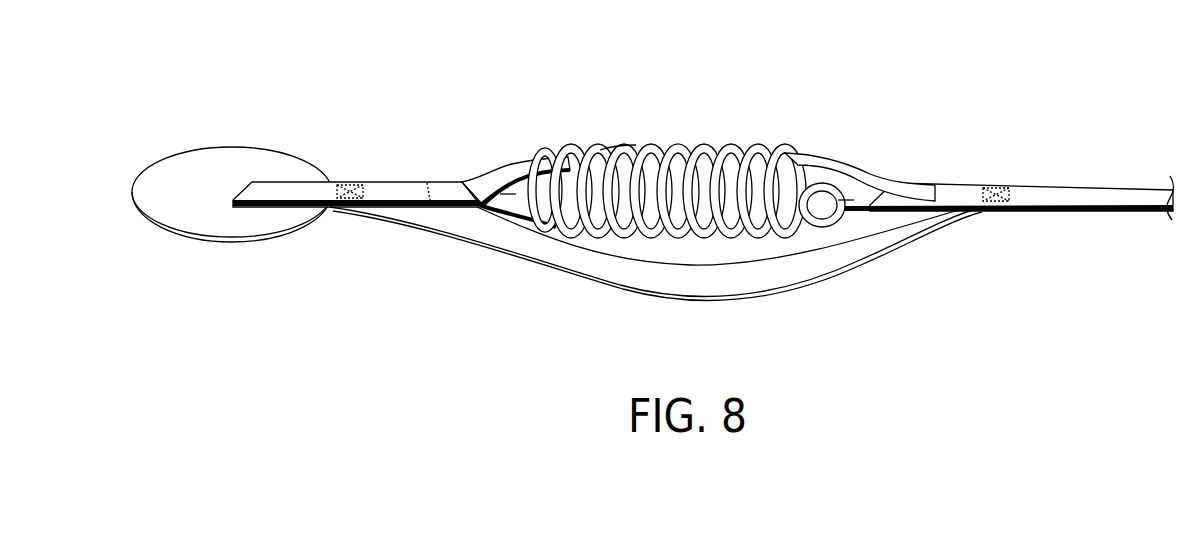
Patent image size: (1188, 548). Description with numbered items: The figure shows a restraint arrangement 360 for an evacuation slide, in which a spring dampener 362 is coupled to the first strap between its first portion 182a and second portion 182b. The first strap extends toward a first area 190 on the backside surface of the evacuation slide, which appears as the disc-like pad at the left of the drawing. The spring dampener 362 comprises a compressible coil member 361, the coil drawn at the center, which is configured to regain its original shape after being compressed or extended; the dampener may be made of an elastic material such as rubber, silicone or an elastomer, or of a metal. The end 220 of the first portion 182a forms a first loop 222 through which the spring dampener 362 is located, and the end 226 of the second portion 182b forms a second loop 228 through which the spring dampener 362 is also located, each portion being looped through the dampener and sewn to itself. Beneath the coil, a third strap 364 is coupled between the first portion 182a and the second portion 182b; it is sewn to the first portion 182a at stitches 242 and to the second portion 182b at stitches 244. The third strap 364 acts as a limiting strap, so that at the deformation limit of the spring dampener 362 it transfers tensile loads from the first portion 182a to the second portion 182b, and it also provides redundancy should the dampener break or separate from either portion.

The restraint arrangement 360 is at (752, 187).
The compressible coil member 361 is at (730, 150).
The spring dampener 362 is at (628, 130).
The third strap 364 is at (585, 262).
The end 226 is at (462, 183).
The end 220 is at (932, 192).
The second loop 228 is at (506, 208).
The first loop 222 is at (848, 216).
The first portion 182a is at (1035, 186).
The second portion 182b is at (398, 184).
The first area 190 is at (230, 218).
The stitches 244 is at (338, 200).
The stitches 242 is at (977, 208).